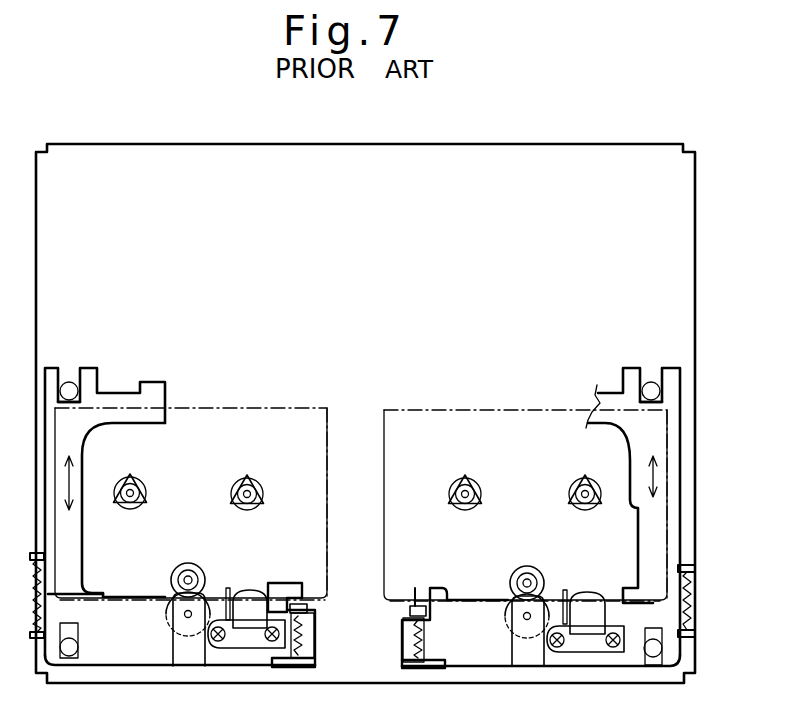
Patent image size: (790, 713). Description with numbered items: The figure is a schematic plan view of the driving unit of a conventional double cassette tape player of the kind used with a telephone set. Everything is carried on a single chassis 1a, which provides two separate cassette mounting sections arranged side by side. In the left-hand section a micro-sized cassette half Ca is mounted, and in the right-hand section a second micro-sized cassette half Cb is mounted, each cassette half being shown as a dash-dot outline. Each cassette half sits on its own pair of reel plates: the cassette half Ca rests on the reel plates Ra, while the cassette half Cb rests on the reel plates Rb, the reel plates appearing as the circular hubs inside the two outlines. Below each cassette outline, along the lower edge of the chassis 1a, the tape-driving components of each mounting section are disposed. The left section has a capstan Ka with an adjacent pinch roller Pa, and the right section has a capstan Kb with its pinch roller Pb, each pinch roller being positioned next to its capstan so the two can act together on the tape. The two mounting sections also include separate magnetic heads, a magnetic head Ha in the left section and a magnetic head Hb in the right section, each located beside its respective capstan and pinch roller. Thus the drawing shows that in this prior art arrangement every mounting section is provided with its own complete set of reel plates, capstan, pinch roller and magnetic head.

The chassis 1a is at (676, 287).
The cassette half Ca is at (261, 418).
The cassette half Cb is at (470, 418).
The reel plate Ra is at (146, 491).
The reel plate Rb is at (450, 494).
The capstan Ka is at (220, 558).
The capstan Kb is at (545, 572).
The magnetic head Ha is at (250, 595).
The magnetic head Hb is at (584, 596).
The pinch roller Pa is at (176, 615).
The pinch roller Pb is at (509, 618).